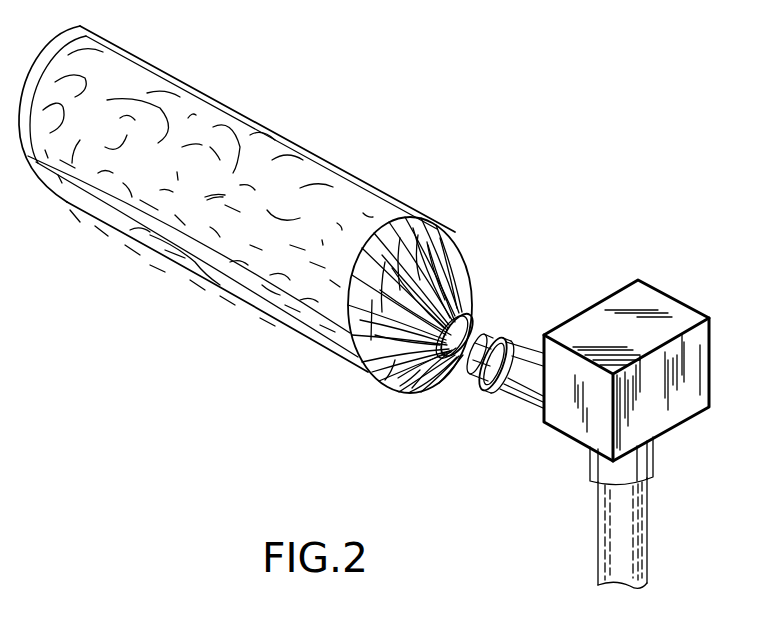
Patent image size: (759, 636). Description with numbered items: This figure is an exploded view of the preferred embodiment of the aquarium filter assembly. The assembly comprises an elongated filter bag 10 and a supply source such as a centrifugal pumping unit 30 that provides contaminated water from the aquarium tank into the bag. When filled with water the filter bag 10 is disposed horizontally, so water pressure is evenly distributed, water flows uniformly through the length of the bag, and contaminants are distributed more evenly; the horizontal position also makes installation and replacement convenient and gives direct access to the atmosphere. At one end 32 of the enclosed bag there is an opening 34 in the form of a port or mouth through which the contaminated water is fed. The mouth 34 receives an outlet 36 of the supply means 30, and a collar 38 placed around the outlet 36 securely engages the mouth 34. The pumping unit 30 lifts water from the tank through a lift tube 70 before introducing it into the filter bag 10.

The filter bag 10 is at (333, 136).
The centrifugal pumping unit 30 is at (633, 270).
The end of the enclosed bag 32 is at (452, 244).
The opening 34 is at (470, 320).
The outlet 36 is at (532, 386).
The collar 38 is at (516, 342).
The lift tube 70 is at (607, 526).